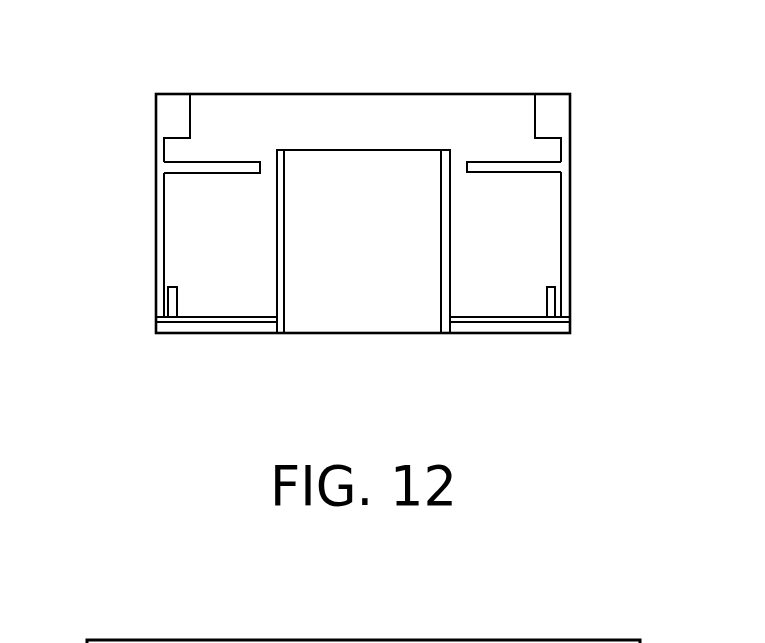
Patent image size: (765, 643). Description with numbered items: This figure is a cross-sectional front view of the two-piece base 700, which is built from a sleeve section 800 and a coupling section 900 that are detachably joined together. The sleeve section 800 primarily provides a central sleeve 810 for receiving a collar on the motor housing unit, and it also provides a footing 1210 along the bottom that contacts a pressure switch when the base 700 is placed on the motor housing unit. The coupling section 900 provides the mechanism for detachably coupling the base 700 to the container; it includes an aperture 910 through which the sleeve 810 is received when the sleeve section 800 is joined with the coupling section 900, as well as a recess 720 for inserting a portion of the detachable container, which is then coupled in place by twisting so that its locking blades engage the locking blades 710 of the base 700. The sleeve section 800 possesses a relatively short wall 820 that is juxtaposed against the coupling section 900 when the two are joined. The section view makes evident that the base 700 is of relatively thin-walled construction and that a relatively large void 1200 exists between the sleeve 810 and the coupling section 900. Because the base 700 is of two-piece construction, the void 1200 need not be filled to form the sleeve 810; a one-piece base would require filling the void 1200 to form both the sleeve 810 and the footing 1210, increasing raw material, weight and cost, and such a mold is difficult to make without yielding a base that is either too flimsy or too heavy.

The two-piece base 700 is at (166, 39).
The locking blades 710 is at (183, 137).
The recess 720 is at (527, 153).
The coupling section 900 is at (148, 174).
The aperture 910 is at (457, 168).
The void 1200 is at (225, 221).
The sleeve section 800 is at (148, 328).
The wall 820 is at (552, 287).
The sleeve 810 is at (285, 265).
The footing 1210 is at (475, 333).